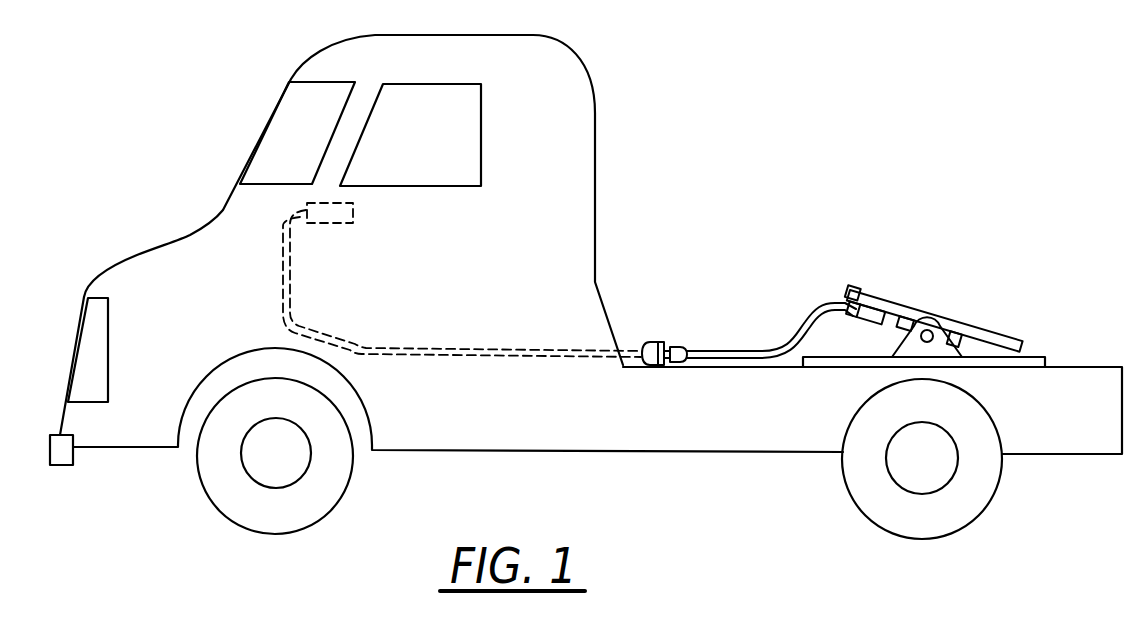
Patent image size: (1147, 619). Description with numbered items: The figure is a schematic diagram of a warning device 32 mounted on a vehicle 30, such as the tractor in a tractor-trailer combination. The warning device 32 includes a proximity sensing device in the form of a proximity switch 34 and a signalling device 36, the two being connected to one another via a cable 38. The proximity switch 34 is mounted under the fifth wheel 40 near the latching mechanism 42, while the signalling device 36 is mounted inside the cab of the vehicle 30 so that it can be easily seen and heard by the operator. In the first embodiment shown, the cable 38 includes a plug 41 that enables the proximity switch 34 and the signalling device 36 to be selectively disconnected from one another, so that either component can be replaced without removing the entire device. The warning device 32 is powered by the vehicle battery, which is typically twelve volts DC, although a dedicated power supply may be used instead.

The vehicle 30 is at (645, 148).
The warning device 32 is at (757, 312).
The proximity switch 34 is at (850, 289).
The signalling device 36 is at (307, 205).
The cable 38 is at (715, 357).
The fifth wheel 40 is at (928, 306).
The plug 41 is at (663, 328).
The latching mechanism 42 is at (960, 327).